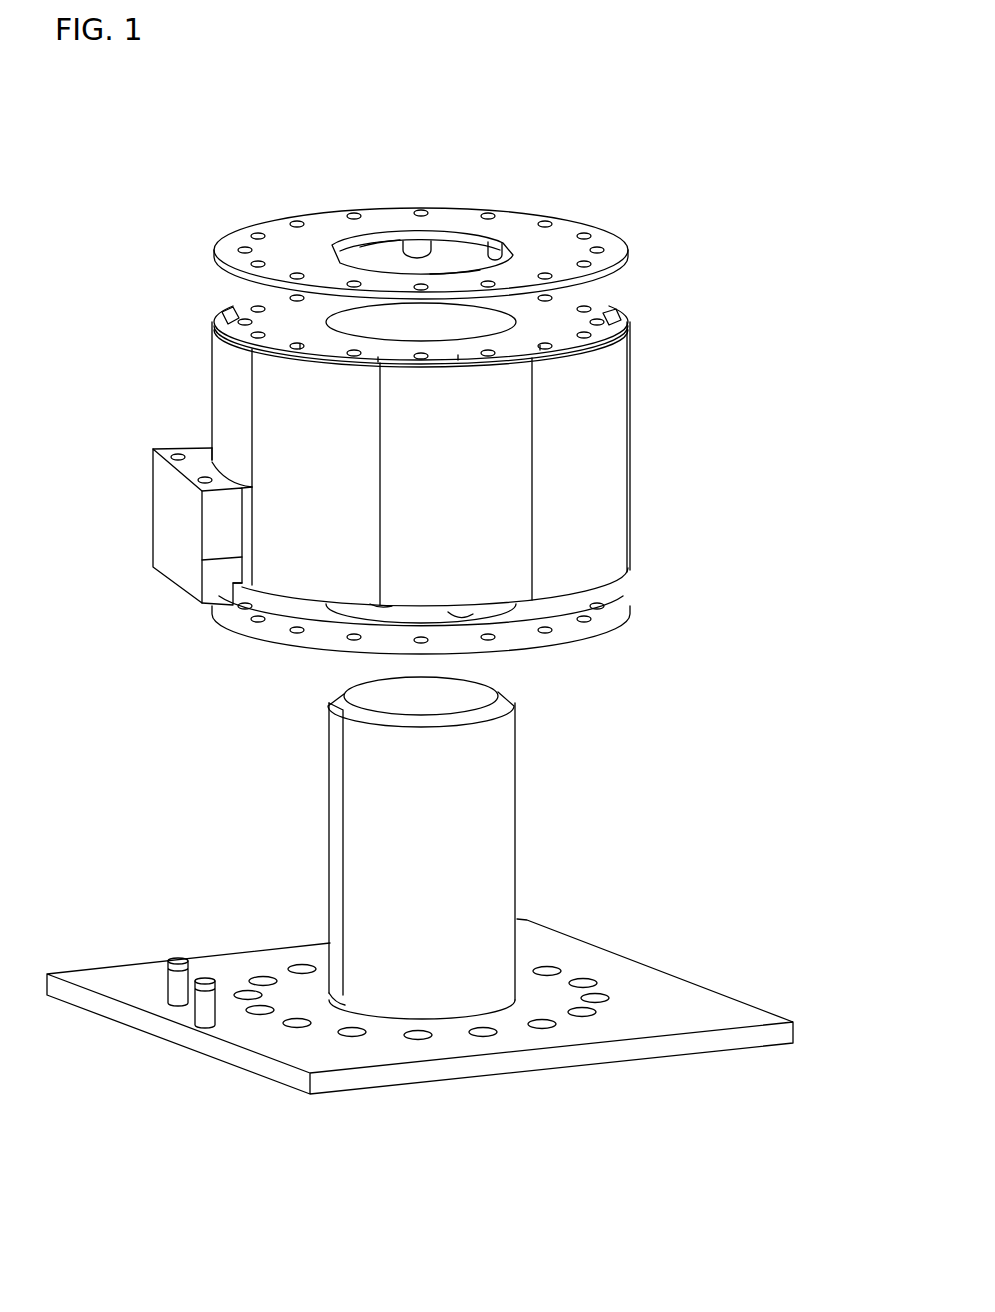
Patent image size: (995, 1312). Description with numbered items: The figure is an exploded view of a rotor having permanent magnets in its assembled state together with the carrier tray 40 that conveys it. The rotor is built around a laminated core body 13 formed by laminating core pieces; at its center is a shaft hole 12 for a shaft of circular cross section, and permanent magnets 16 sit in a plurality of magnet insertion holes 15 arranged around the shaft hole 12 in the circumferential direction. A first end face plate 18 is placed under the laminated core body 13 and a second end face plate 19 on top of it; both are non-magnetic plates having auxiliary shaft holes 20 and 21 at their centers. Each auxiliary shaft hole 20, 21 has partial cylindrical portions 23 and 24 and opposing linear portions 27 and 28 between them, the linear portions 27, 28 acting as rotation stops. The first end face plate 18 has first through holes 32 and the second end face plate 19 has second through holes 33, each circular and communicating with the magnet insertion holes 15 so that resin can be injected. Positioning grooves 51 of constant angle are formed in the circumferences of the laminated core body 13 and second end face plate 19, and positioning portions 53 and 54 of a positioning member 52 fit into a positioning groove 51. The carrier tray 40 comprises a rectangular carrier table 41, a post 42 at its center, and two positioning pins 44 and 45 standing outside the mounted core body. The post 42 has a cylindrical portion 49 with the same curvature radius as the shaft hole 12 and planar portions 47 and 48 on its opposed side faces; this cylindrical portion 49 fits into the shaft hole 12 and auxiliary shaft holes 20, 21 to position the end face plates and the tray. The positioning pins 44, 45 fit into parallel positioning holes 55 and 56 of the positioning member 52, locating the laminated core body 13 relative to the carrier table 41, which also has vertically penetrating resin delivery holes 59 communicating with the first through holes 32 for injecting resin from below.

The shaft hole 12 is at (497, 322).
The laminated core body 13 is at (608, 475).
The magnet insertion holes 15 is at (276, 366).
The permanent magnets 16 is at (577, 352).
The first end face plate 18 is at (630, 612).
The second end face plate 19 is at (612, 248).
The auxiliary shaft hole 20 is at (380, 487).
The auxiliary shaft hole 21 is at (378, 228).
The partial cylindrical portion 23 is at (432, 245).
The partial cylindrical portion 24 is at (460, 272).
The linear portion 27 is at (338, 242).
The linear portion 28 is at (492, 243).
The first through holes 32 is at (599, 608).
The second through holes 33 is at (588, 240).
The carrier tray 40 is at (420, 992).
The carrier table 41 is at (692, 993).
The post 42 is at (500, 849).
The positioning pin 44 is at (178, 958).
The positioning pin 45 is at (205, 978).
The planar portion 47 is at (328, 812).
The planar portion 48 is at (530, 783).
The cylindrical portion 49 is at (452, 1005).
The positioning grooves 51 is at (532, 543).
The positioning member 52 is at (158, 527).
The positioning portion 53 is at (212, 438).
The positioning portion 54 is at (245, 532).
The positioning hole 55 is at (203, 478).
The positioning hole 56 is at (176, 455).
The resin delivery holes 59 is at (352, 1037).